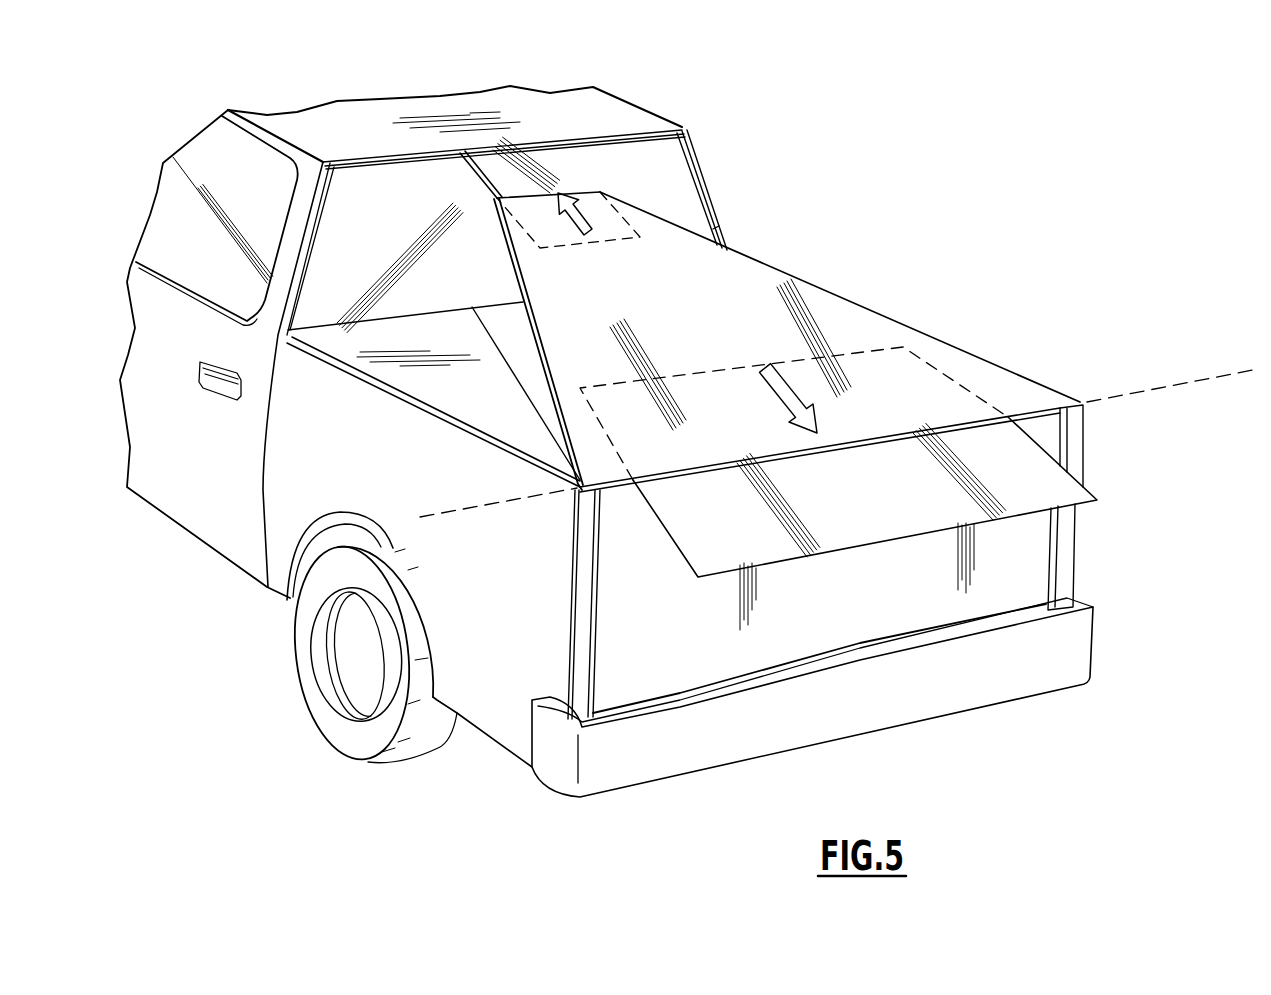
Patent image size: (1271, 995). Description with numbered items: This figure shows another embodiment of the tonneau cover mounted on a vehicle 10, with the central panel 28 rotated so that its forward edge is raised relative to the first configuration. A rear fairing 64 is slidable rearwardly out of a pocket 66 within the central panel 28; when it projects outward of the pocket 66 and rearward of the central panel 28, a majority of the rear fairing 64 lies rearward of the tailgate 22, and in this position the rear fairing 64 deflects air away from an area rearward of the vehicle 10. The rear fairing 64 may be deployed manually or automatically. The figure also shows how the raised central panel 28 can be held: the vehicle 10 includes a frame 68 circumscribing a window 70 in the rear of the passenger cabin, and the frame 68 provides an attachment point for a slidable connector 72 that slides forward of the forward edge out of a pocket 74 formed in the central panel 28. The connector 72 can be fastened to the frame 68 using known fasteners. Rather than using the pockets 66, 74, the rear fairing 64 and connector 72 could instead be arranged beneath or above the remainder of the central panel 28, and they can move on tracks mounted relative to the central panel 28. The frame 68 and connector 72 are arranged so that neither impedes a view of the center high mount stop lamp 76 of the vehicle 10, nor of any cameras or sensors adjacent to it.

The vehicle 10 is at (902, 130).
The tailgate 22 is at (830, 605).
The central panel 28 is at (757, 262).
The rear fairing 64 is at (862, 522).
The pocket 66 is at (928, 362).
The frame 68 is at (707, 185).
The window 70 is at (647, 183).
The slidable connector 72 is at (557, 177).
The pocket 74 is at (552, 233).
The center high mount stop lamp (CHMSL) 76 is at (533, 108).